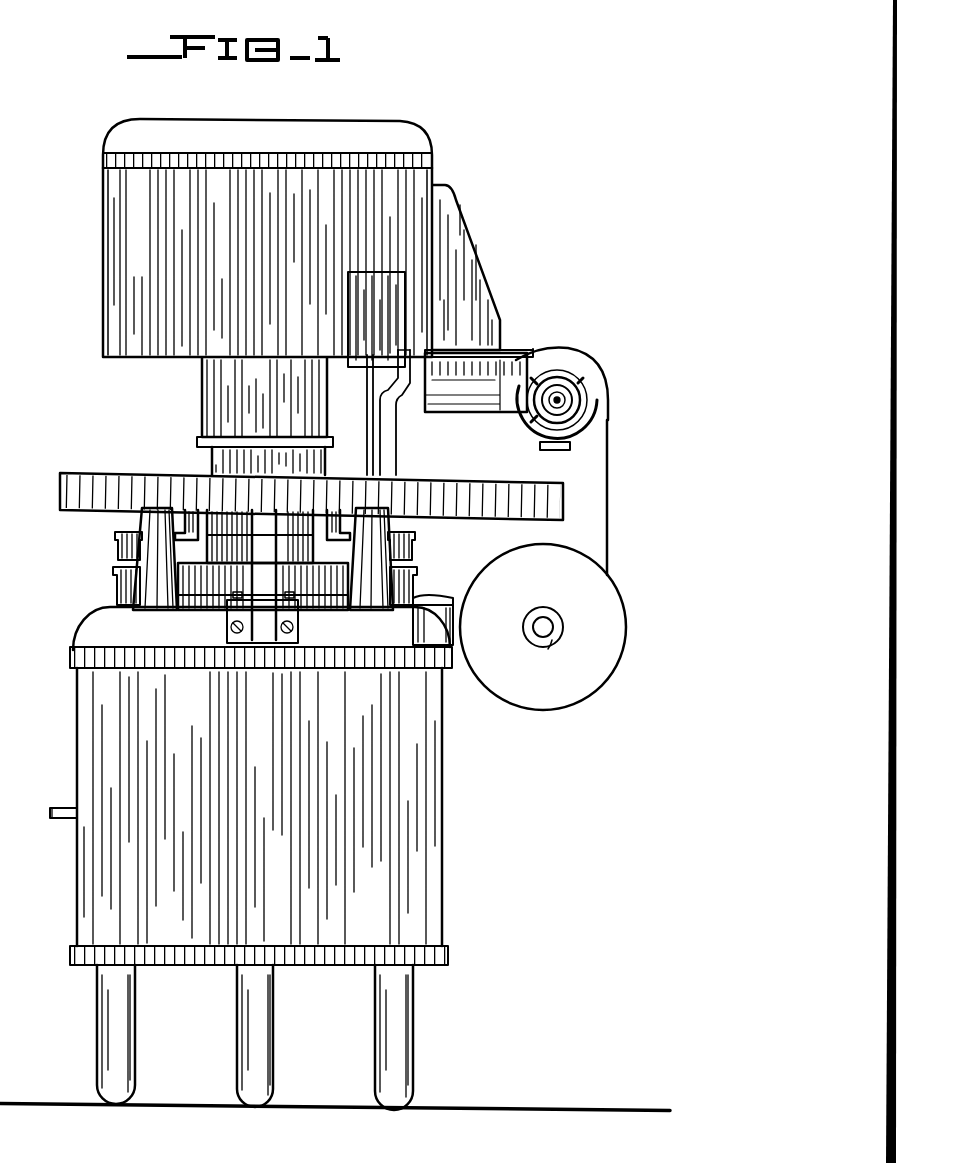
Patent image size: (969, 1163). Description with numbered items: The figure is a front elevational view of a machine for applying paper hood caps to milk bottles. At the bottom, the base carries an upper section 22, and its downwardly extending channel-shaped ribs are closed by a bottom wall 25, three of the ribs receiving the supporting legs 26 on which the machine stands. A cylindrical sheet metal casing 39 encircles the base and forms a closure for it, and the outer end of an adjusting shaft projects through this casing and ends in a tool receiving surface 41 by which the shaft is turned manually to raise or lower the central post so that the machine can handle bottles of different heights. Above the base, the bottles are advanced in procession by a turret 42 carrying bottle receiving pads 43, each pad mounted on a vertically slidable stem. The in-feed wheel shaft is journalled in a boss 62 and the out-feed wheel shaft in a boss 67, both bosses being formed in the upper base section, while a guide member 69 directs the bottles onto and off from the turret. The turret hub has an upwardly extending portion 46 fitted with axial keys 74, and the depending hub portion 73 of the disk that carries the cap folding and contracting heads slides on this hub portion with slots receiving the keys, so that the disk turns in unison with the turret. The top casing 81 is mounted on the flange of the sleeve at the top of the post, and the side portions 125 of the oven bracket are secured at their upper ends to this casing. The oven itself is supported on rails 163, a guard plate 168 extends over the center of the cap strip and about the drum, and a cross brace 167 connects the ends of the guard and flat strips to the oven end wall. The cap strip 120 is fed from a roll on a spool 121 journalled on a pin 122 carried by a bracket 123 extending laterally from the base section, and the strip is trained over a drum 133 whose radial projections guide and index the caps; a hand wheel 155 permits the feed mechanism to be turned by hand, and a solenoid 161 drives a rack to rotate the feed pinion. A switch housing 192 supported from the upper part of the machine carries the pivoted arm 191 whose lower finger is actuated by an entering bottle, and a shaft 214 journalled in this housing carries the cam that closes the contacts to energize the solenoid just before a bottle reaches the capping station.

The top casing 81 is at (432, 146).
The side portions of bracket 125 is at (475, 256).
The switch housing 192 is at (360, 368).
The hub portion 73 is at (210, 403).
The keys 74 is at (211, 460).
The upwardly extending hub portion 46 is at (326, 466).
The shaft 214 is at (366, 437).
The arm 191 is at (397, 443).
The solenoid 161 is at (485, 398).
The cross brace 167 is at (502, 355).
The rails 163 is at (548, 358).
The guard plate 168 is at (590, 362).
The hand wheel 155 is at (548, 418).
The drum 133 is at (565, 452).
The cap strip 120 is at (607, 493).
The guide member 69 is at (70, 512).
The boss 67 is at (140, 515).
The boss 62 is at (390, 520).
The bottle receiving pads 43 is at (428, 551).
The turret 42 is at (115, 580).
The upper section 22 is at (82, 625).
The cylindrical sheet metal casing 39 is at (78, 745).
The tool receiving surface 41 is at (62, 806).
The wall 25 is at (449, 962).
The supporting legs 26 is at (423, 1045).
The bracket 123 is at (440, 597).
The spool 121 is at (626, 612).
The pin 122 is at (553, 620).